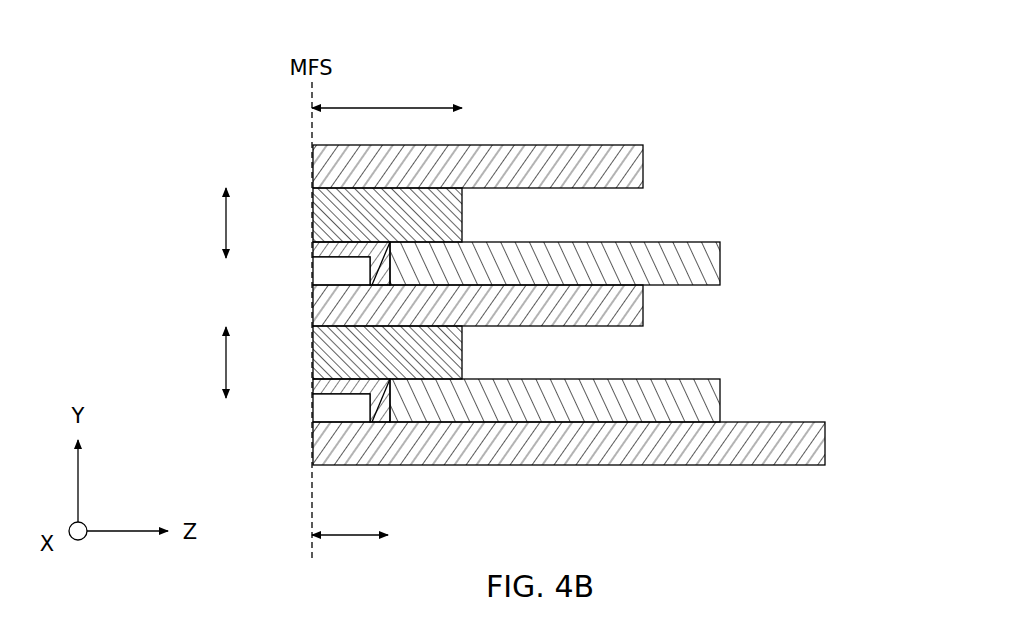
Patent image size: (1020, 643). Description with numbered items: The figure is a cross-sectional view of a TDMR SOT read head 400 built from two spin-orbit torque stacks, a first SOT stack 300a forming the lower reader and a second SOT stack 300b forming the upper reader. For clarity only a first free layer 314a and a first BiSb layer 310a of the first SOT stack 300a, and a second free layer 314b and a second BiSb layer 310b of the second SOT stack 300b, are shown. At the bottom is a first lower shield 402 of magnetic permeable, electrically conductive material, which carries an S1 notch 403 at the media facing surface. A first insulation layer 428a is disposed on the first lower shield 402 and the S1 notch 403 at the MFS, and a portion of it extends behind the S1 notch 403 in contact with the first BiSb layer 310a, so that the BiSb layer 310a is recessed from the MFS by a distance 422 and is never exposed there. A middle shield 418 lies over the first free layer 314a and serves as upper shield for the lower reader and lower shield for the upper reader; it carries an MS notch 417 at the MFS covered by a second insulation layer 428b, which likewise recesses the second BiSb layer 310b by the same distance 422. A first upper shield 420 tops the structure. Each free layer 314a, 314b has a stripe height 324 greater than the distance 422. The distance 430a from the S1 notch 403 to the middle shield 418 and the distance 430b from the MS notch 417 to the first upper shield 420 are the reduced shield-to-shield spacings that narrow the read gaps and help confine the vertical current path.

The TDMR SOT read head 400 is at (683, 70).
The first SOT stack 300a is at (514, 382).
The second SOT stack 300b is at (513, 240).
The first BiSb layer 310a is at (578, 415).
The second BiSb layer 310b is at (578, 274).
The first free layer 314a is at (410, 365).
The second free layer 314b is at (410, 227).
The stripe height 324 is at (370, 108).
The first lower shield 402 is at (523, 453).
The S1 notch 403 is at (362, 432).
The MS notch 417 is at (362, 291).
The middle shield 418 is at (495, 318).
The first upper shield 420 is at (450, 178).
The distance 422 is at (350, 532).
The first insulation layer 428a is at (320, 385).
The second insulation layer 428b is at (320, 247).
The distance 430a is at (226, 358).
The distance 430b is at (226, 220).